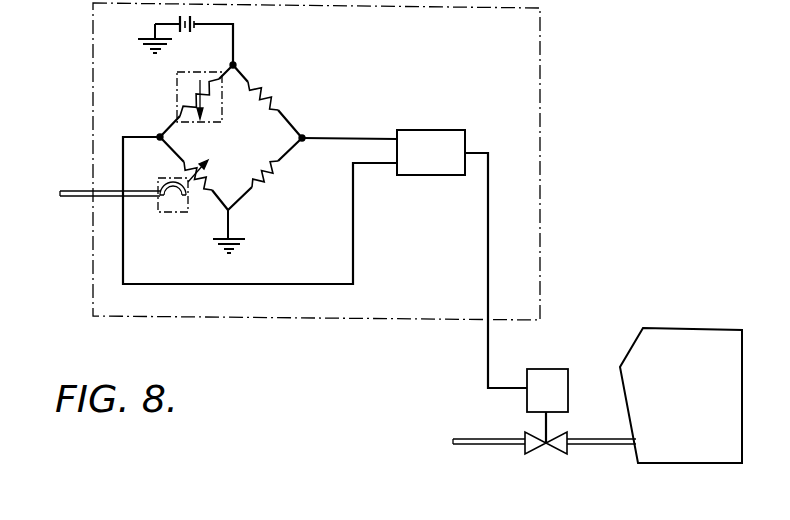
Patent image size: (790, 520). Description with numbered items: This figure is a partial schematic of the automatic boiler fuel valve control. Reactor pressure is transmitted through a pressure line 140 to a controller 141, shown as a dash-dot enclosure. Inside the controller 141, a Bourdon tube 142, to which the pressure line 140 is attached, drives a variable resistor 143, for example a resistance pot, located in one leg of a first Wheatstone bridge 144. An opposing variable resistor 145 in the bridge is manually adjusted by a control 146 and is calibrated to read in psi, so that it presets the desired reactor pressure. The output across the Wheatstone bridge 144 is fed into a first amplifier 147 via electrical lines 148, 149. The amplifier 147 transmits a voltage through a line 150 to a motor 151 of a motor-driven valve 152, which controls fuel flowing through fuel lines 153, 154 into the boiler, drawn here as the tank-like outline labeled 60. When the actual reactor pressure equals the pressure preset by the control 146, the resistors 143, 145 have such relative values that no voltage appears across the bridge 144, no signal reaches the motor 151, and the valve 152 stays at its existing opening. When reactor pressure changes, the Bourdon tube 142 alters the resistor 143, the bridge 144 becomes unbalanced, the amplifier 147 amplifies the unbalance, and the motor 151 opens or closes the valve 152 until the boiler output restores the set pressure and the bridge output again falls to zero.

The tank 60 is at (690, 328).
The pressure line 140 is at (75, 191).
The controller 141 is at (288, 318).
The Bourdon tube 142 is at (158, 213).
The variable resistor 143 is at (192, 168).
The first Wheatstone bridge 144 is at (278, 88).
The opposing variable resistor 145 is at (200, 97).
The control 146 is at (177, 105).
The first amplifier 147 is at (443, 130).
The electrical line 148 is at (353, 225).
The electrical line 149 is at (377, 138).
The line 150 is at (488, 269).
The motor 151 is at (552, 369).
The motor-driven valve 152 is at (552, 452).
The fuel line 153 is at (488, 438).
The fuel line 154 is at (617, 452).